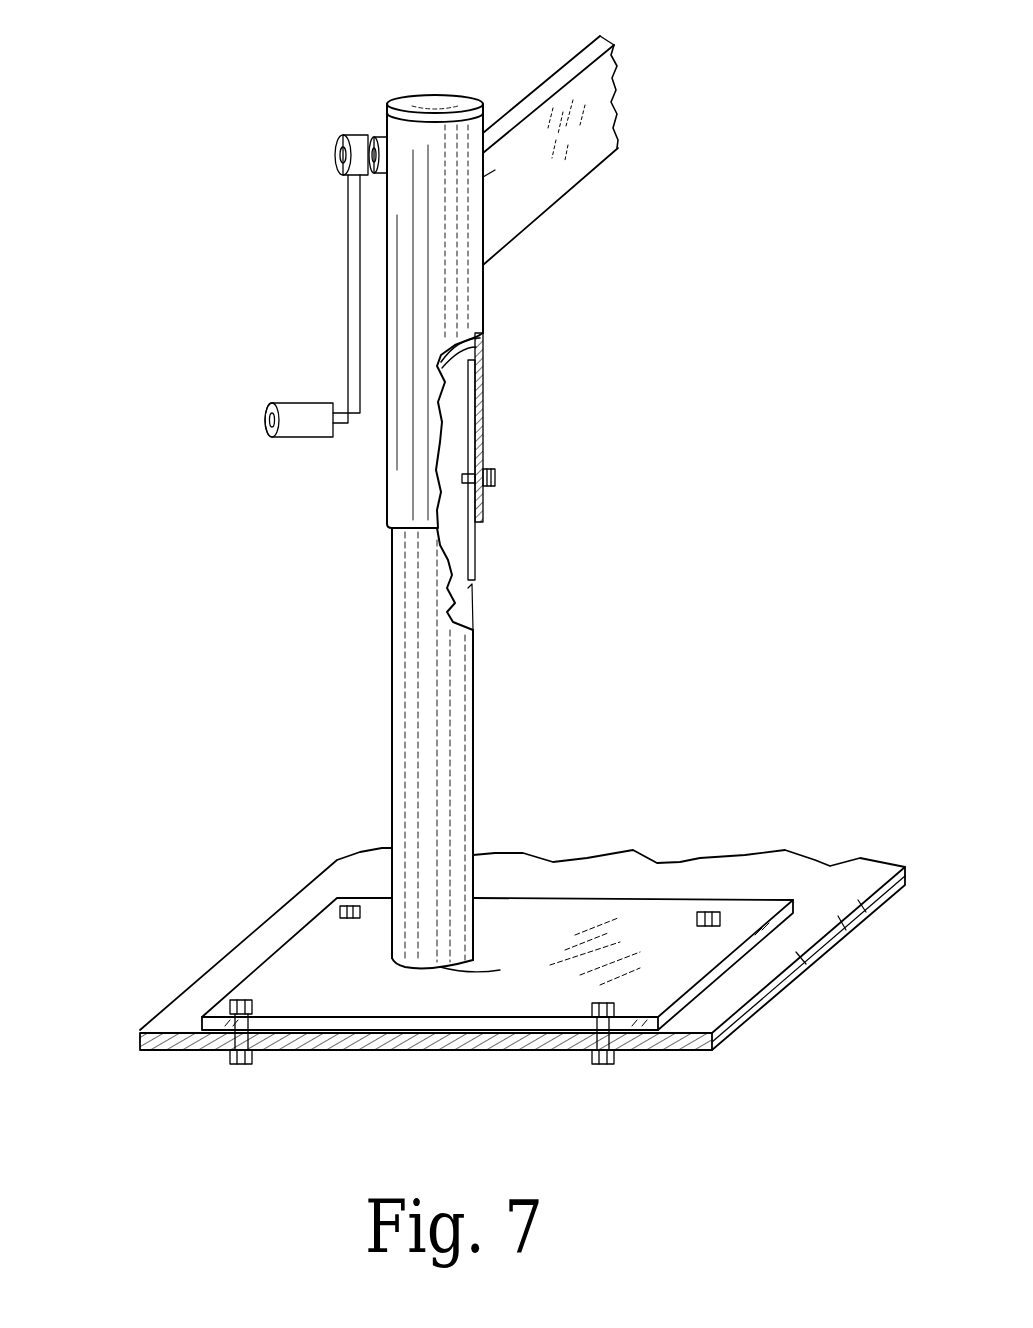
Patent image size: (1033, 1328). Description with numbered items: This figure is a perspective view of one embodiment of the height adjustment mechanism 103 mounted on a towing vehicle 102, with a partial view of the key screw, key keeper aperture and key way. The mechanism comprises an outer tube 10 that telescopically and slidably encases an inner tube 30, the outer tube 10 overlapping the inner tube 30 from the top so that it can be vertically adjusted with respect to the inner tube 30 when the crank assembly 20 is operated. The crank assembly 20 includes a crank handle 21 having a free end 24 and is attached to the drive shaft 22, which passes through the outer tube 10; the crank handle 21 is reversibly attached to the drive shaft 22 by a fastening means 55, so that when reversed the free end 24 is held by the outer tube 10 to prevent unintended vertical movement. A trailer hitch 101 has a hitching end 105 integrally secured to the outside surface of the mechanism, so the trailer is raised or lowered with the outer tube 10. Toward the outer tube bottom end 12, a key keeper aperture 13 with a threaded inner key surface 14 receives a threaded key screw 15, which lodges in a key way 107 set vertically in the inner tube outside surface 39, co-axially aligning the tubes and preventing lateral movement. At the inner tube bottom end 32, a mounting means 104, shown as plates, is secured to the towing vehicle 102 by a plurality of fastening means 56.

The outer tube 10 is at (463, 315).
The outer tube bottom end 12 is at (402, 530).
The key keeper aperture 13 is at (485, 490).
The threaded inner key surface 14 is at (478, 467).
The threaded key screw 15 is at (495, 477).
The crank assembly 20 is at (267, 252).
The crank handle 21 is at (352, 288).
The drive shaft 22 is at (378, 135).
The free end 24 is at (265, 417).
The inner tube 30 is at (460, 748).
The inner tube bottom end 32 is at (500, 970).
The inner tube outside surface 39 is at (483, 287).
The fastening means 55 is at (340, 155).
The fastening means 56 is at (345, 906).
The trailer hitch 101 is at (595, 138).
The towing vehicle 102 is at (357, 875).
The height adjustment mechanism 103 is at (612, 278).
The mounting means 104 is at (355, 975).
The hitching end 105 is at (483, 177).
The key way 107 is at (474, 552).